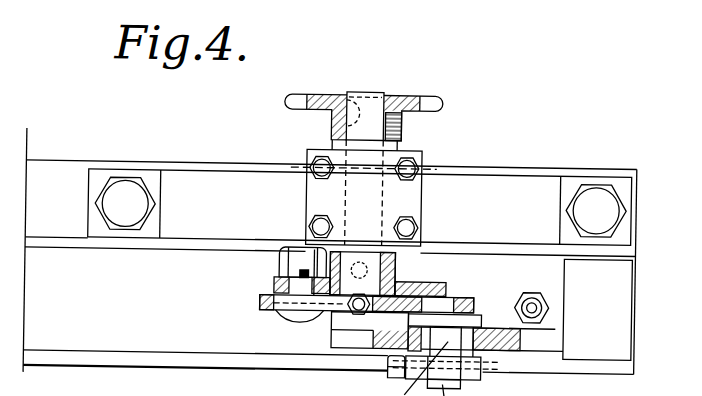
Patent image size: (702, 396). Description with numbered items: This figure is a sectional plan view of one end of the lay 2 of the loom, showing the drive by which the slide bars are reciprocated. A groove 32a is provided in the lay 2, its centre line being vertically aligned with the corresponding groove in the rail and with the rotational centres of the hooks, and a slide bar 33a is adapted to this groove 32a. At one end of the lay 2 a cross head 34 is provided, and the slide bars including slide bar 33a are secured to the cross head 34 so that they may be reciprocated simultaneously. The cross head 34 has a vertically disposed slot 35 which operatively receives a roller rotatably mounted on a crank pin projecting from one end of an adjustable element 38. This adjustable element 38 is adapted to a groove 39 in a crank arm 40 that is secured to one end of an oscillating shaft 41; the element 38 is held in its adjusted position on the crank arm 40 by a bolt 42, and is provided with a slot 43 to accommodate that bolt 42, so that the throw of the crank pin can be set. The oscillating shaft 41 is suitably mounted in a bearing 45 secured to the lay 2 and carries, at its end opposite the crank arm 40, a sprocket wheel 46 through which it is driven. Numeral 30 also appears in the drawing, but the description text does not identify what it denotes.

The lay 2 is at (636, 283).
The base 30 is at (205, 380).
The groove 32a is at (41, 252).
The slide bar 33a is at (205, 322).
The cross head 34 is at (523, 338).
The slot 35 is at (502, 353).
The adjustable element 38 is at (263, 313).
The groove 39 is at (449, 297).
The crank arm 40 is at (446, 294).
The oscillating shaft 41 is at (364, 93).
The bolt 42 is at (298, 317).
The slot 43 is at (327, 316).
The bearing 45 is at (422, 153).
The sprocket wheel 46 is at (413, 99).